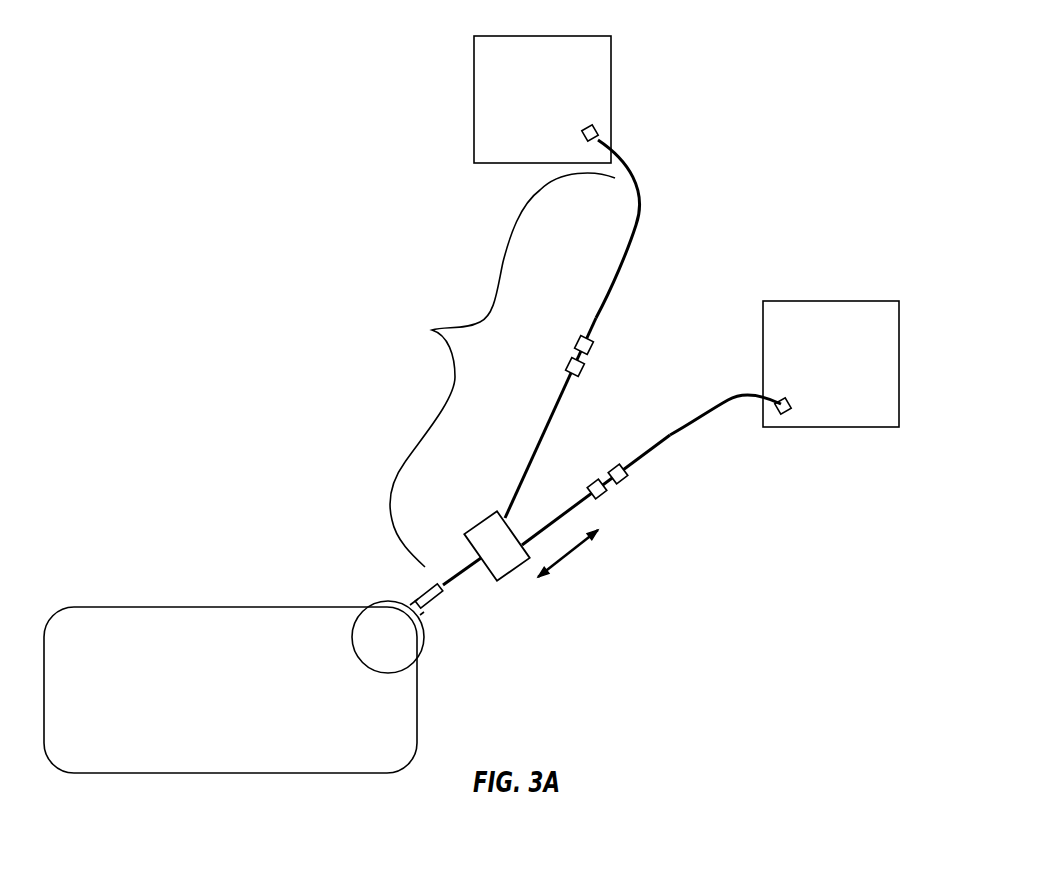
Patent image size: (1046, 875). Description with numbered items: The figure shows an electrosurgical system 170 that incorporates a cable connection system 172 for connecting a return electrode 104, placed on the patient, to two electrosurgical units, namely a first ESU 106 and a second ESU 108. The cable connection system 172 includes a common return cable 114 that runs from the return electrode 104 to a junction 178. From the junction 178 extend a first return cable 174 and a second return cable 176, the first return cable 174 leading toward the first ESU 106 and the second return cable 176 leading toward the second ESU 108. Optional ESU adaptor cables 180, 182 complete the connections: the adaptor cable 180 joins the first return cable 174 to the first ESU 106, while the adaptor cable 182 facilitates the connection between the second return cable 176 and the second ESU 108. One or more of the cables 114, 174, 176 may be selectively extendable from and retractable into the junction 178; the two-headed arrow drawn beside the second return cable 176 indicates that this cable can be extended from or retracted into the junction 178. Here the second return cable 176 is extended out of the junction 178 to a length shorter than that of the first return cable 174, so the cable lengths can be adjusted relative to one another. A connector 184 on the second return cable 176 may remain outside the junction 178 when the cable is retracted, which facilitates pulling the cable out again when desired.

The return electrode 104 is at (173, 773).
The first ESU 106 is at (580, 36).
The second ESU 108 is at (899, 330).
The common return cable 114 is at (470, 585).
The electrosurgical system 170 is at (198, 123).
The cable connection system 172 is at (555, 396).
The first return cable 174 is at (533, 438).
The second return cable 176 is at (590, 518).
The junction 178 is at (514, 576).
The ESU adaptor cable 180 is at (658, 195).
The adaptor cable 182 is at (717, 415).
The connector 184 is at (607, 502).